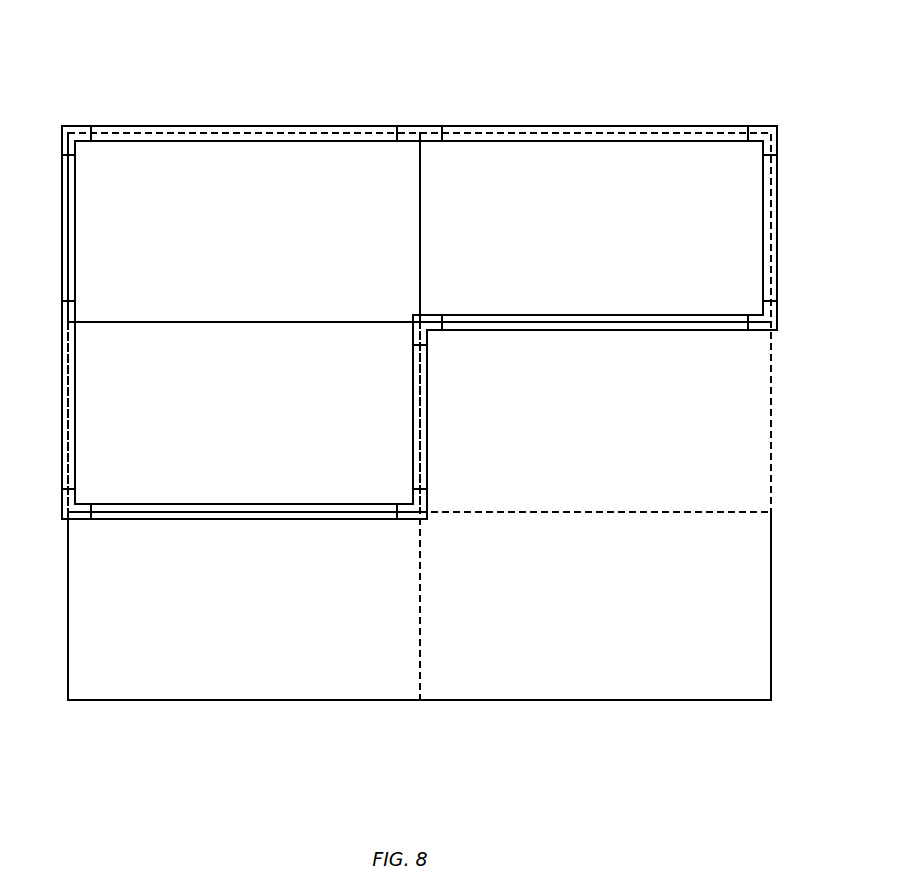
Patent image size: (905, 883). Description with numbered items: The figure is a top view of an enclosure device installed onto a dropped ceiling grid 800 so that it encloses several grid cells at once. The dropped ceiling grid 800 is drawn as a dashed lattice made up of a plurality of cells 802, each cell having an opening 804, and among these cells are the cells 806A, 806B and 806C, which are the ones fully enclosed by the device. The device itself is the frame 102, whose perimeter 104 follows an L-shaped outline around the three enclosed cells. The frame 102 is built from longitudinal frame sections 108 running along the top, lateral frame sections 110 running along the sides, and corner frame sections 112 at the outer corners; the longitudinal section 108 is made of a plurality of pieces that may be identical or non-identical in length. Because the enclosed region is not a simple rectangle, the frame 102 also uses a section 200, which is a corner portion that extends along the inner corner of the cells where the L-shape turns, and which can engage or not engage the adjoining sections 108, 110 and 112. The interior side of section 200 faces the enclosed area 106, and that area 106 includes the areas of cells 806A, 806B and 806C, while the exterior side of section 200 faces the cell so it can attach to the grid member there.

The frame 102 is at (593, 128).
The perimeter 104 is at (270, 138).
The area 106 is at (582, 217).
The longitudinal frame section 108 is at (175, 127).
The lateral frame section 110 is at (77, 227).
The corner frame section 112 is at (77, 150).
The corner portion section 200 is at (428, 332).
The dropped ceiling grid 800 is at (603, 722).
The cells 802 is at (345, 700).
The openings 804 is at (213, 667).
The cell 806A is at (235, 185).
The cell 806B is at (128, 407).
The cell 806C is at (728, 165).